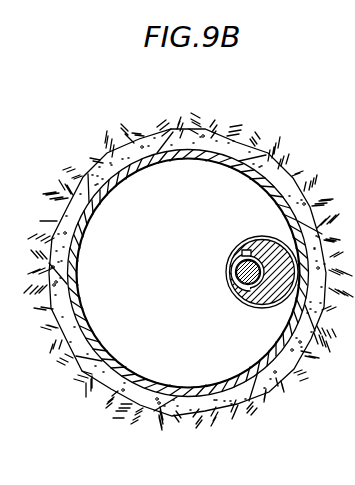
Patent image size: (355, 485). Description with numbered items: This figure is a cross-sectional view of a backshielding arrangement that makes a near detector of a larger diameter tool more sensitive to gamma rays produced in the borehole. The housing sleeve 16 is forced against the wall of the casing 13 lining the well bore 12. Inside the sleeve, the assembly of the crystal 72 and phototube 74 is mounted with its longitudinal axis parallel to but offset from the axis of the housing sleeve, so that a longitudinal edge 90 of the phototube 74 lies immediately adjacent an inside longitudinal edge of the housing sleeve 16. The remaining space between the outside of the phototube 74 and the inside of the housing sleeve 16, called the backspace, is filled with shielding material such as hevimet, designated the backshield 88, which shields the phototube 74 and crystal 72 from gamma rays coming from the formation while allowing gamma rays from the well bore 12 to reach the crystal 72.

The well bore 12 is at (131, 321).
The casing 13 is at (243, 140).
The phototube 74 is at (290, 198).
The housing sleeve 16 is at (242, 307).
The backshield 88 is at (251, 253).
The crystal 72 is at (238, 278).
The longitudinal edge of phototube 90 is at (233, 270).